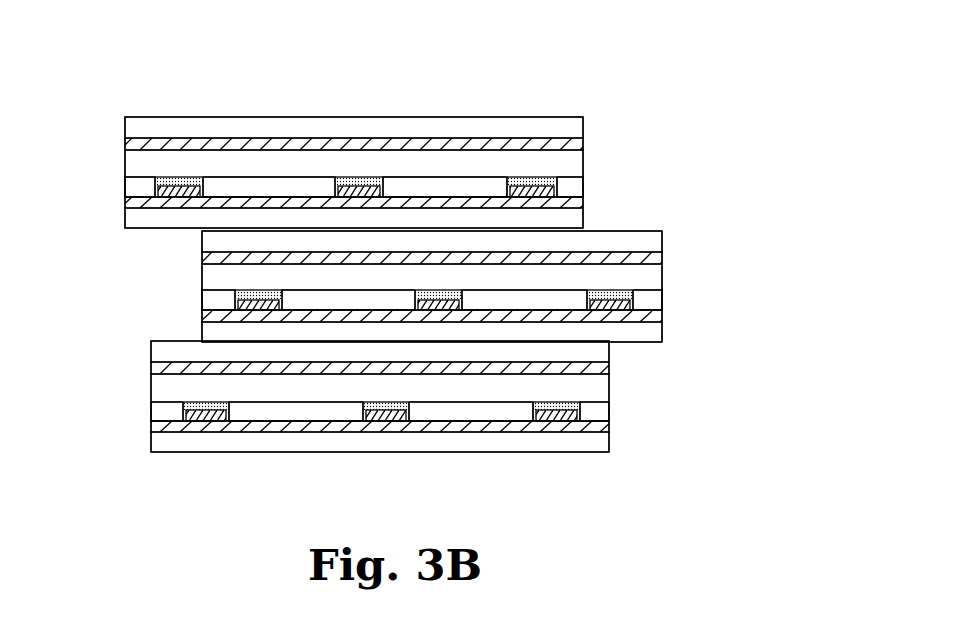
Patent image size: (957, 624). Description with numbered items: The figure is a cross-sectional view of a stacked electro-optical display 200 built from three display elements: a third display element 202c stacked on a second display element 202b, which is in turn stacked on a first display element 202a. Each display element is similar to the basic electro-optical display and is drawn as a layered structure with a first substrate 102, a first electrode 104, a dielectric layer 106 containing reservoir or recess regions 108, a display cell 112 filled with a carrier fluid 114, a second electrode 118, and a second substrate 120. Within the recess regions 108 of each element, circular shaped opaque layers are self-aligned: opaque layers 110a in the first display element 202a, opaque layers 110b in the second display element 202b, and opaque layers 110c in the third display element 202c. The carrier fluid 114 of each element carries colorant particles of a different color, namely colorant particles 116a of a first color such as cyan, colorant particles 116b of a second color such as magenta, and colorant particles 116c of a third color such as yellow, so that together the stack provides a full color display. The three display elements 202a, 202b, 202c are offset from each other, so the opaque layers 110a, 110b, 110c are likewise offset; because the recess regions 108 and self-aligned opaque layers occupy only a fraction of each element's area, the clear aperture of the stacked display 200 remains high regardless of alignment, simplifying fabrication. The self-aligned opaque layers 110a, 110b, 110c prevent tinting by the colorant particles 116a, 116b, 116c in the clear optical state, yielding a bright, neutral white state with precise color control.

The stacked electro-optical display 200 is at (661, 44).
The first display element 202a is at (128, 403).
The second display element 202b is at (183, 289).
The third display element 202c is at (105, 177).
The first substrate 102 is at (583, 216).
The first electrode 104 is at (583, 201).
The dielectric layer 106 is at (583, 188).
The recess regions 108 is at (160, 172).
The opaque layers 110a is at (203, 425).
The opaque layers 110b is at (253, 310).
The opaque layers 110c is at (178, 185).
The display cell 112 is at (576, 158).
The carrier fluid 114 is at (313, 175).
The colorant particles 116a is at (216, 399).
The colorant particles 116b is at (268, 287).
The colorant particles 116c is at (189, 175).
The second electrode 118 is at (583, 143).
The second substrate 120 is at (583, 125).